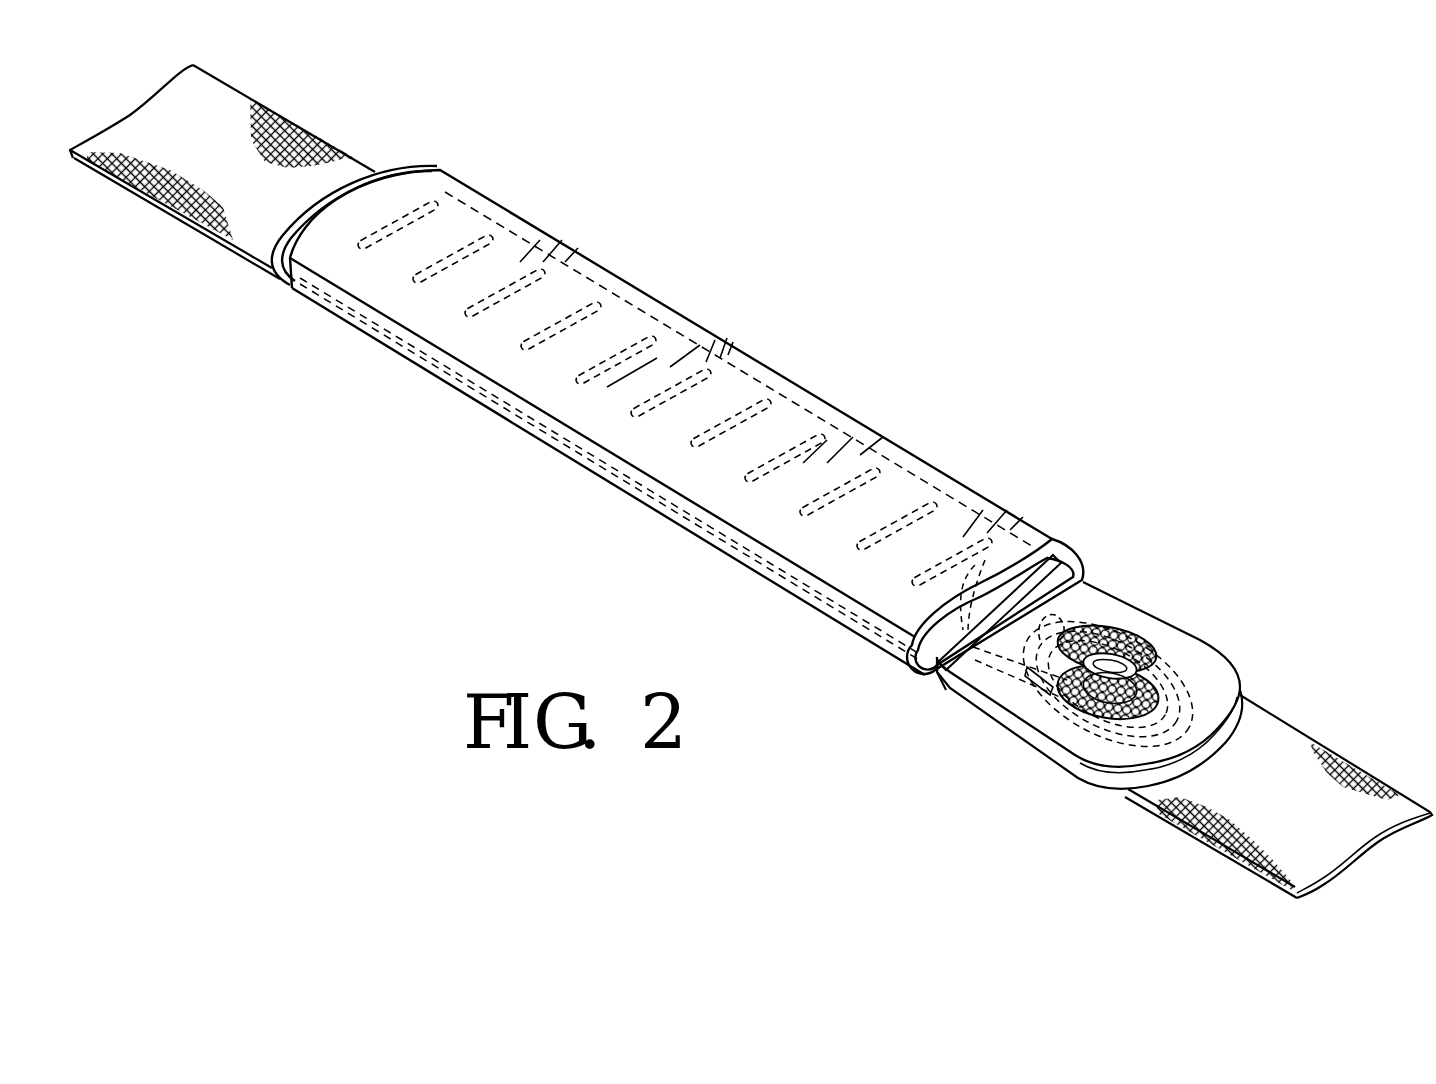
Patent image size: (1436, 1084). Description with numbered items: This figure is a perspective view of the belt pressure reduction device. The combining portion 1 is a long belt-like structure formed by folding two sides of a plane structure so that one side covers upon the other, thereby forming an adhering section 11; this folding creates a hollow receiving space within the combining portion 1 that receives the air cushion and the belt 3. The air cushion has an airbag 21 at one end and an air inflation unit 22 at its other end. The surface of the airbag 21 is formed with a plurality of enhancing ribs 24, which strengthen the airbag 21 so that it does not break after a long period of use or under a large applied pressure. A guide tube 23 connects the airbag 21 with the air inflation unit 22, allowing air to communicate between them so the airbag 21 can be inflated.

The combining portion 1 is at (667, 238).
The belt 3 is at (1257, 720).
The adhering section 11 is at (1045, 555).
The airbag 21 is at (1062, 573).
The air inflation unit 22 is at (1147, 615).
The guide tube 23 is at (963, 640).
The enhancing ribs 24 is at (768, 402).